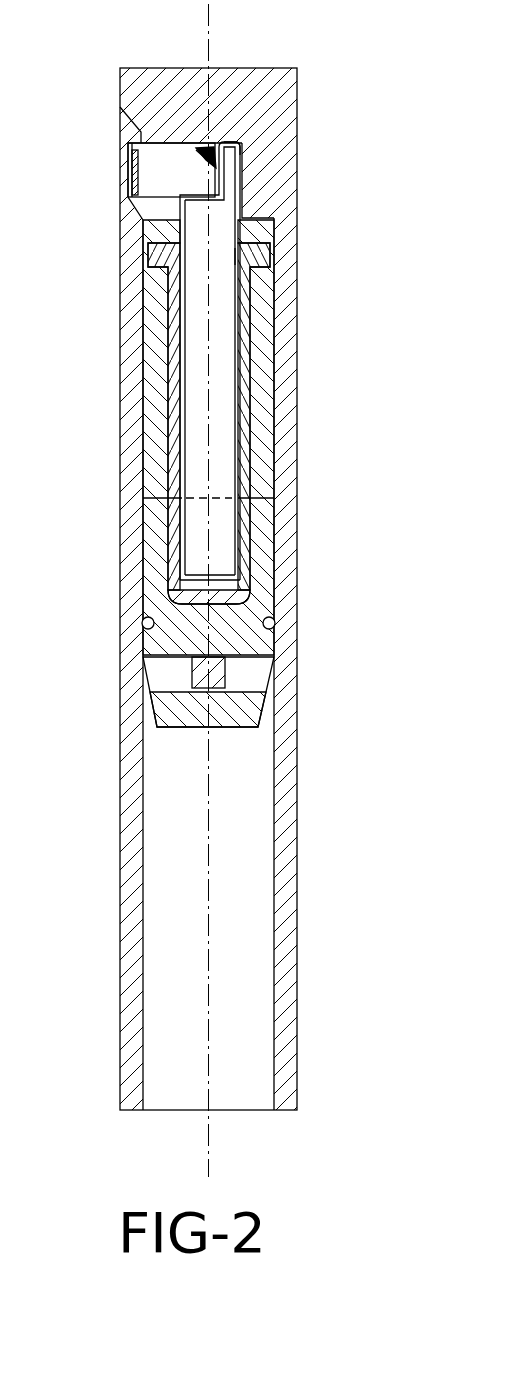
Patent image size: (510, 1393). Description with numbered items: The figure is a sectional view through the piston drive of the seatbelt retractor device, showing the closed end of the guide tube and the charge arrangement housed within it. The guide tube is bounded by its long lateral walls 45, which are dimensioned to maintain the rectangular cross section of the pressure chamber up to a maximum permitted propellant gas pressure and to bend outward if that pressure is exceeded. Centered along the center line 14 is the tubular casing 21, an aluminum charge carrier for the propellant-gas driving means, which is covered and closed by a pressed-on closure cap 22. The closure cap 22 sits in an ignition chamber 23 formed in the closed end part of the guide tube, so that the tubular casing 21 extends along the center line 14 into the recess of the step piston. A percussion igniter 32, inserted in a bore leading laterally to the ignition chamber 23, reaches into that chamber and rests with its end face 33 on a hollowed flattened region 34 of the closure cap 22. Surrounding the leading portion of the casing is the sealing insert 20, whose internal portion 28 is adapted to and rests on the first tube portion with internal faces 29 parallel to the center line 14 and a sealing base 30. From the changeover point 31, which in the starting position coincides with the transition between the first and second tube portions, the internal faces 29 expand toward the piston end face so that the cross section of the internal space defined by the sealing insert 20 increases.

The center line 14 is at (218, 330).
The sealing insert 20 is at (243, 383).
The tubular casing 21 is at (232, 258).
The closure cap 22 is at (244, 203).
The ignition chamber 23 is at (213, 152).
The internal portion 28 is at (242, 552).
The internal faces 29 is at (183, 543).
The sealing base 30 is at (217, 598).
The changeover point 31 is at (220, 492).
The percussion igniter 32 is at (157, 157).
The end face 33 is at (210, 160).
The hollowed flattened region 34 is at (242, 141).
The long lateral walls 45 is at (283, 248).